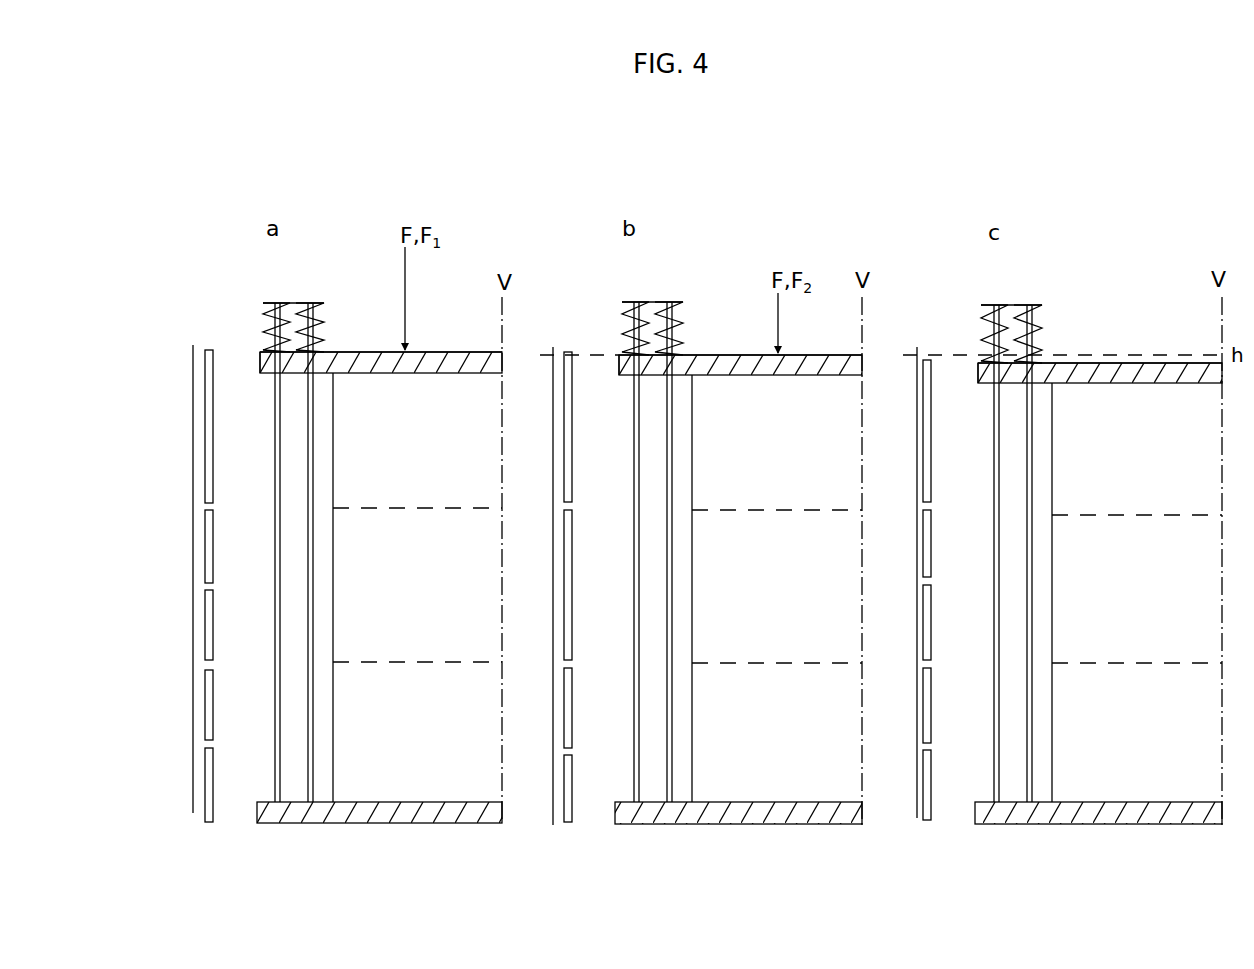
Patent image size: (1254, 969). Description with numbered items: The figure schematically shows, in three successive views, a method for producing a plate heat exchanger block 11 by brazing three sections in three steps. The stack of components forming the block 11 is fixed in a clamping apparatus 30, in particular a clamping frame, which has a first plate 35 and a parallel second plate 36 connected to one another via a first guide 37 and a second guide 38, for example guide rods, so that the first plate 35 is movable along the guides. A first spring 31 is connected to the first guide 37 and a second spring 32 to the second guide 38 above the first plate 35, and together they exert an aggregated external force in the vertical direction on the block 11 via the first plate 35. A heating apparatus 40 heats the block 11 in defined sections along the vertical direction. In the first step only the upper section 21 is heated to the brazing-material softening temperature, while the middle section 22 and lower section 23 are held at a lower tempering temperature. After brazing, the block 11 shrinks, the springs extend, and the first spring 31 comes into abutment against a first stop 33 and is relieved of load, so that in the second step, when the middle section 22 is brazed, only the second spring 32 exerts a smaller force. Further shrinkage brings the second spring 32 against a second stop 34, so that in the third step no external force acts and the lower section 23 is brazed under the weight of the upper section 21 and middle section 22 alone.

The block 11 is at (423, 402).
The upper section 21 is at (378, 457).
The middle section 22 is at (378, 597).
The lower section 23 is at (378, 751).
The clamping apparatus 30 is at (420, 323).
The first spring 31 is at (310, 303).
The second spring 32 is at (277, 303).
The first stop 33 is at (318, 350).
The second stop 34 is at (262, 352).
The first plate 35 is at (352, 352).
The second plate 36 is at (376, 823).
The first guide 37 is at (275, 437).
The second guide 38 is at (308, 508).
The heating apparatus 40 is at (193, 583).